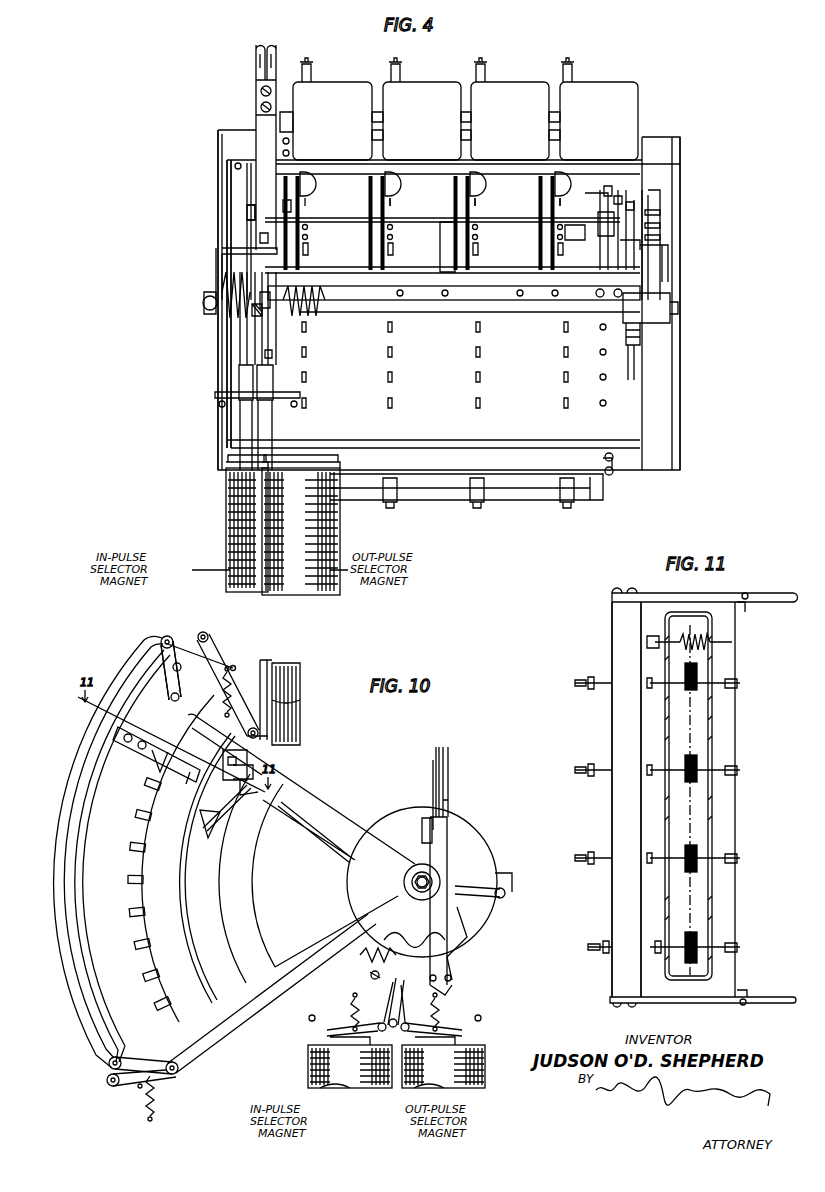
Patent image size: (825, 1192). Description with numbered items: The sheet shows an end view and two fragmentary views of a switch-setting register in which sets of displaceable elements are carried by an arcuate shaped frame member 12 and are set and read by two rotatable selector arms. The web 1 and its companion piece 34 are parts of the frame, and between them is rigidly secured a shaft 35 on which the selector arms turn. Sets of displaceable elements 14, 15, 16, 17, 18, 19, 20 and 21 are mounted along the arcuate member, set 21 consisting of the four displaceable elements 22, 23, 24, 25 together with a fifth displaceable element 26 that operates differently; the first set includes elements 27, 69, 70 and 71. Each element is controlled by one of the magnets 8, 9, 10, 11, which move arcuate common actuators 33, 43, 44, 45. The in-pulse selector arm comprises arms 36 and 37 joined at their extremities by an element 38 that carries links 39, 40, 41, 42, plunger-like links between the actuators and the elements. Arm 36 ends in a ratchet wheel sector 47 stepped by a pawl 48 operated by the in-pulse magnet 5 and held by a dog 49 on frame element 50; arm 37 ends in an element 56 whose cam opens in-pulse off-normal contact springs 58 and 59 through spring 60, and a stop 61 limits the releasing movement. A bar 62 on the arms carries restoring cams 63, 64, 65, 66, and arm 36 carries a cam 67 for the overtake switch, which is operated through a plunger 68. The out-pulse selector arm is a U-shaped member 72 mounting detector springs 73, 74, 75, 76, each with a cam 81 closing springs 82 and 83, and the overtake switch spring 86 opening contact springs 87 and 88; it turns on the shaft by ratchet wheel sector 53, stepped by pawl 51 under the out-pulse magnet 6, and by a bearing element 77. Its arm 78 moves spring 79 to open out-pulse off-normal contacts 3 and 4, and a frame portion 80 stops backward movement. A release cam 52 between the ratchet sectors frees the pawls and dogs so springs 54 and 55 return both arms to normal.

In FIG. 4, the web 1 is at (218, 351).
In FIG. 10, the web 1 is at (253, 929).
In FIG. 4, the out-pulse off-normal contact 3 is at (262, 128).
In FIG. 10, the out-pulse off-normal contact 3 is at (440, 762).
In FIG. 10, the out-pulse off-normal contact 4 is at (446, 792).
In FIG. 4, the in-pulse magnet 5 is at (228, 541).
In FIG. 10, the in-pulse magnet 5 is at (331, 1070).
In FIG. 4, the out-pulse magnet 6 is at (330, 541).
In FIG. 10, the out-pulse magnet 6 is at (428, 1070).
In FIG. 4, the magnet 8 is at (338, 90).
In FIG. 10, the magnet 8 is at (286, 662).
In FIG. 4, the magnet 9 is at (428, 90).
In FIG. 4, the magnet 10 is at (514, 90).
In FIG. 4, the magnet 11 is at (602, 90).
In FIG. 10, the arcuate shaped frame member 12 is at (190, 1026).
In FIG. 10, the set of displaceable elements 14 is at (137, 782).
In FIG. 10, the set of displaceable elements 15 is at (131, 815).
In FIG. 10, the set of displaceable elements 16 is at (130, 849).
In FIG. 10, the set of displaceable elements 17 is at (129, 882).
In FIG. 10, the set of displaceable elements 18 is at (130, 916).
In FIG. 10, the set of displaceable elements 19 is at (134, 949).
In FIG. 10, the set of displaceable elements 20 is at (142, 981).
In FIG. 10, the set of displaceable elements 21 is at (154, 1010).
In FIG. 4, the displaceable element 22 is at (307, 404).
In FIG. 4, the displaceable element 23 is at (393, 404).
In FIG. 4, the displaceable element 24 is at (481, 404).
In FIG. 4, the displaceable element 25 is at (569, 404).
In FIG. 4, the fifth displaceable element 26 is at (606, 404).
In FIG. 11, the displaceable element 27 is at (677, 945).
In FIG. 10, the arcuate common actuator 33 is at (163, 638).
In FIG. 11, the arcuate common actuator 33 is at (588, 952).
In FIG. 4, the companion piece 34 is at (681, 366).
In FIG. 4, the shaft 35 is at (412, 305).
In FIG. 10, the shaft 35 is at (432, 879).
In FIG. 4, the arm 36 is at (240, 193).
In FIG. 10, the arm 36 is at (176, 776).
In FIG. 11, the arm 36 is at (700, 1003).
In FIG. 4, the arm 37 is at (650, 205).
In FIG. 11, the arm 37 is at (712, 598).
In FIG. 11, the element 38 is at (618, 806).
In FIG. 11, the link 39 is at (606, 954).
In FIG. 11, the link 40 is at (605, 864).
In FIG. 11, the link 41 is at (605, 776).
In FIG. 11, the link 42 is at (605, 689).
In FIG. 10, the arcuate common actuator 43 is at (118, 673).
In FIG. 11, the arcuate common actuator 43 is at (580, 864).
In FIG. 11, the arcuate common actuator 44 is at (578, 775).
In FIG. 11, the arcuate common actuator 45 is at (582, 688).
In FIG. 4, the ratchet wheel sector 47 is at (250, 340).
In FIG. 10, the ratchet wheel sector 47 is at (362, 956).
In FIG. 4, the pawl 48 is at (240, 376).
In FIG. 10, the pawl 48 is at (382, 968).
In FIG. 10, the dog 49 is at (452, 960).
In FIG. 4, the element 50 is at (216, 394).
In FIG. 10, the element 50 is at (455, 980).
In FIG. 4, the pawl 51 is at (268, 380).
In FIG. 10, the pawl 51 is at (402, 975).
In FIG. 4, the release cam 52 is at (256, 345).
In FIG. 4, the ratchet wheel sector 53 is at (264, 358).
In FIG. 4, the spring 54 is at (226, 280).
In FIG. 4, the spring 55 is at (318, 312).
In FIG. 4, the element 56 is at (642, 340).
In FIG. 4, the in-pulse off-normal contact spring 58 is at (660, 213).
In FIG. 4, the in-pulse off-normal contact spring 59 is at (660, 226).
In FIG. 4, the spring 60 is at (660, 238).
In FIG. 4, the stop 61 is at (668, 253).
In FIG. 4, the bar 62 is at (443, 222).
In FIG. 10, the bar 62 is at (232, 808).
In FIG. 10, the cam 63 is at (210, 834).
In FIG. 11, the cam 63 is at (736, 947).
In FIG. 11, the cam 64 is at (736, 858).
In FIG. 11, the cam 65 is at (736, 770).
In FIG. 11, the cam 66 is at (736, 683).
In FIG. 10, the cam 67 is at (160, 750).
In FIG. 11, the cam 67 is at (650, 640).
In FIG. 11, the plunger 68 is at (685, 638).
In FIG. 11, the displaceable element 69 is at (677, 856).
In FIG. 11, the displaceable element 70 is at (677, 768).
In FIG. 11, the displaceable element 71 is at (678, 682).
In FIG. 4, the U-shaped member 72 is at (419, 284).
In FIG. 4, the detector contact spring 73 is at (305, 206).
In FIG. 4, the detector contact spring 74 is at (390, 207).
In FIG. 4, the detector contact spring 75 is at (477, 207).
In FIG. 4, the detector contact spring 76 is at (568, 216).
In FIG. 4, the bearing element 77 is at (636, 356).
In FIG. 10, the arm 78 is at (424, 822).
In FIG. 10, the spring 79 is at (432, 765).
In FIG. 4, the portion of the frame 80 is at (222, 251).
In FIG. 10, the portion of the frame 80 is at (447, 836).
In FIG. 4, the cam 81 is at (315, 181).
In FIG. 10, the cam 81 is at (222, 757).
In FIG. 4, the spring 82 is at (288, 208).
In FIG. 10, the spring 82 is at (262, 763).
In FIG. 4, the spring 83 is at (248, 207).
In FIG. 4, the spring 86 is at (610, 192).
In FIG. 4, the contact spring 87 is at (620, 201).
In FIG. 4, the contact spring 88 is at (632, 207).